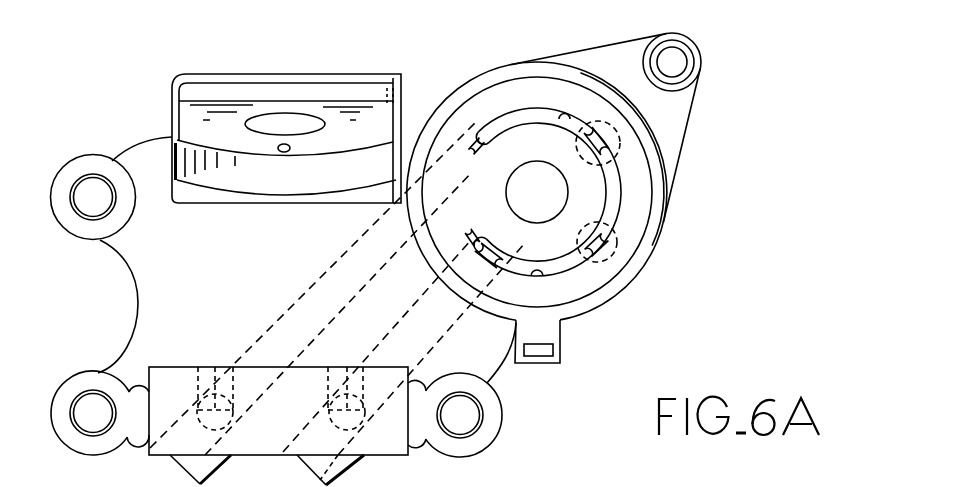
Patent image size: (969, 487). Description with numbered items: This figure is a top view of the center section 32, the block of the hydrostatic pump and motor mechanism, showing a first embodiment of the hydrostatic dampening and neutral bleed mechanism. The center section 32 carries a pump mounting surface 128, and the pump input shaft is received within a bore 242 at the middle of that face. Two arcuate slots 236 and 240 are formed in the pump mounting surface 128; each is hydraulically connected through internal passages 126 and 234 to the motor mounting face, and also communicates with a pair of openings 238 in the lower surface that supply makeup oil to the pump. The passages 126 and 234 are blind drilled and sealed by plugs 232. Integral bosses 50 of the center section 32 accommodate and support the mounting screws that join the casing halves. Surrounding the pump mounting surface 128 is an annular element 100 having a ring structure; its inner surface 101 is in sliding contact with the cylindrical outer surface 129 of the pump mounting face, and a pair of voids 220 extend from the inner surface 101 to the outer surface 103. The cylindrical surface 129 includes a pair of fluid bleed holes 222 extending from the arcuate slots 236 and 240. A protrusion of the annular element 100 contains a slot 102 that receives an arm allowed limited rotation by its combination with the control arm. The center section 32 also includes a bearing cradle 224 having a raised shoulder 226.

The center section 32 is at (100, 78).
The integral bosses 50 is at (63, 212).
The annular element 100 is at (652, 250).
The inner surface 101 is at (445, 124).
The slot 102 is at (559, 359).
The outer surface 103 is at (444, 96).
The internal passage 126 is at (415, 303).
The pump mounting surface 128 is at (625, 205).
The cylindrical outer surface 129 is at (640, 137).
The voids 220 is at (488, 112).
The fluid bleed holes 222 is at (497, 112).
The bearing cradle 224 is at (248, 90).
The raised shoulder 226 is at (187, 160).
The plugs 232 is at (168, 458).
The internal passage 234 is at (292, 296).
The arcuate slot 236 is at (568, 117).
The openings 238 is at (617, 234).
The arcuate slot 240 is at (541, 278).
The bore 242 is at (568, 192).